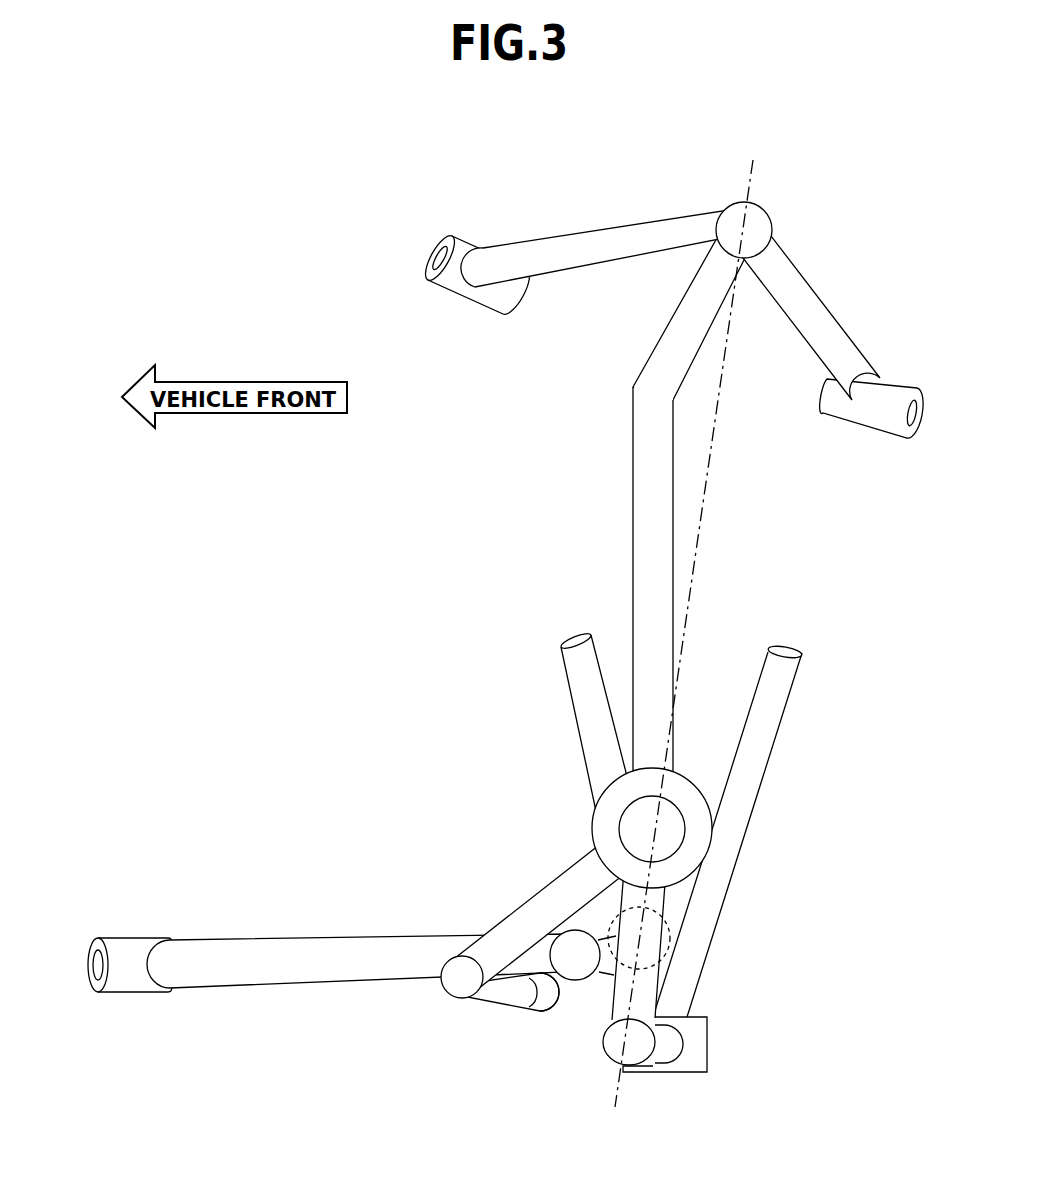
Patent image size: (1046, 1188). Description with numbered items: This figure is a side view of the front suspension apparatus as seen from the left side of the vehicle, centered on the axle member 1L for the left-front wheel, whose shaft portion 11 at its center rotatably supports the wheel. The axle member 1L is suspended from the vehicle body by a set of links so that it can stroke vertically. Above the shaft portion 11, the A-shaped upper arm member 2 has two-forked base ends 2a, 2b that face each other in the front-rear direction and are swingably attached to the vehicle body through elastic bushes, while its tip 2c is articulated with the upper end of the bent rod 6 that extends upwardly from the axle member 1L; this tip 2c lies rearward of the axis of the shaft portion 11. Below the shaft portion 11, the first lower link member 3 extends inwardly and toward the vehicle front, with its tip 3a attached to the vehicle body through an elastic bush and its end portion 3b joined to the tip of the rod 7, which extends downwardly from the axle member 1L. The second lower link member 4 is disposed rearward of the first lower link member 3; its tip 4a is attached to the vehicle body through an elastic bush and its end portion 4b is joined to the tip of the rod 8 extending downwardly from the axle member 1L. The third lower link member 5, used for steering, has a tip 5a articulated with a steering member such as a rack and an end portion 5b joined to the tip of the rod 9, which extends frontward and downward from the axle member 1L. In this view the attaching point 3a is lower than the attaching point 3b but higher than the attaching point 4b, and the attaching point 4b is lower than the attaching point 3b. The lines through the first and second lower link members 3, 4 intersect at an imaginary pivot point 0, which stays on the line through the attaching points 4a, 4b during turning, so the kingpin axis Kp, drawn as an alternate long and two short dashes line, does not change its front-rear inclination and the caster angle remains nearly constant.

The upper arm member 2 is at (805, 272).
The base end of upper arm member 2a is at (471, 243).
The base end of upper arm member 2b is at (897, 382).
The tip of upper arm member 2c is at (737, 203).
The bent rod 6 is at (632, 433).
The kingpin axis Kp is at (712, 455).
The axle member for left-front wheel 1L is at (592, 830).
The shaft portion 11 is at (686, 832).
The rod 8 is at (666, 904).
The imaginary pivot point 0 is at (673, 927).
The first lower link member 3 is at (321, 937).
The tip of first lower link member 3a is at (130, 937).
The end portion of first lower link member 3b is at (578, 980).
The rod 9 is at (515, 910).
The third lower link member 5 is at (492, 1003).
The tip of third lower link member 5a is at (538, 1013).
The end portion of third lower link member 5b is at (449, 993).
The rod 7 is at (607, 954).
The second lower link member 4 is at (661, 1075).
The tip of second lower link member 4a is at (703, 1072).
The end portion of second lower link member 4b is at (636, 1068).